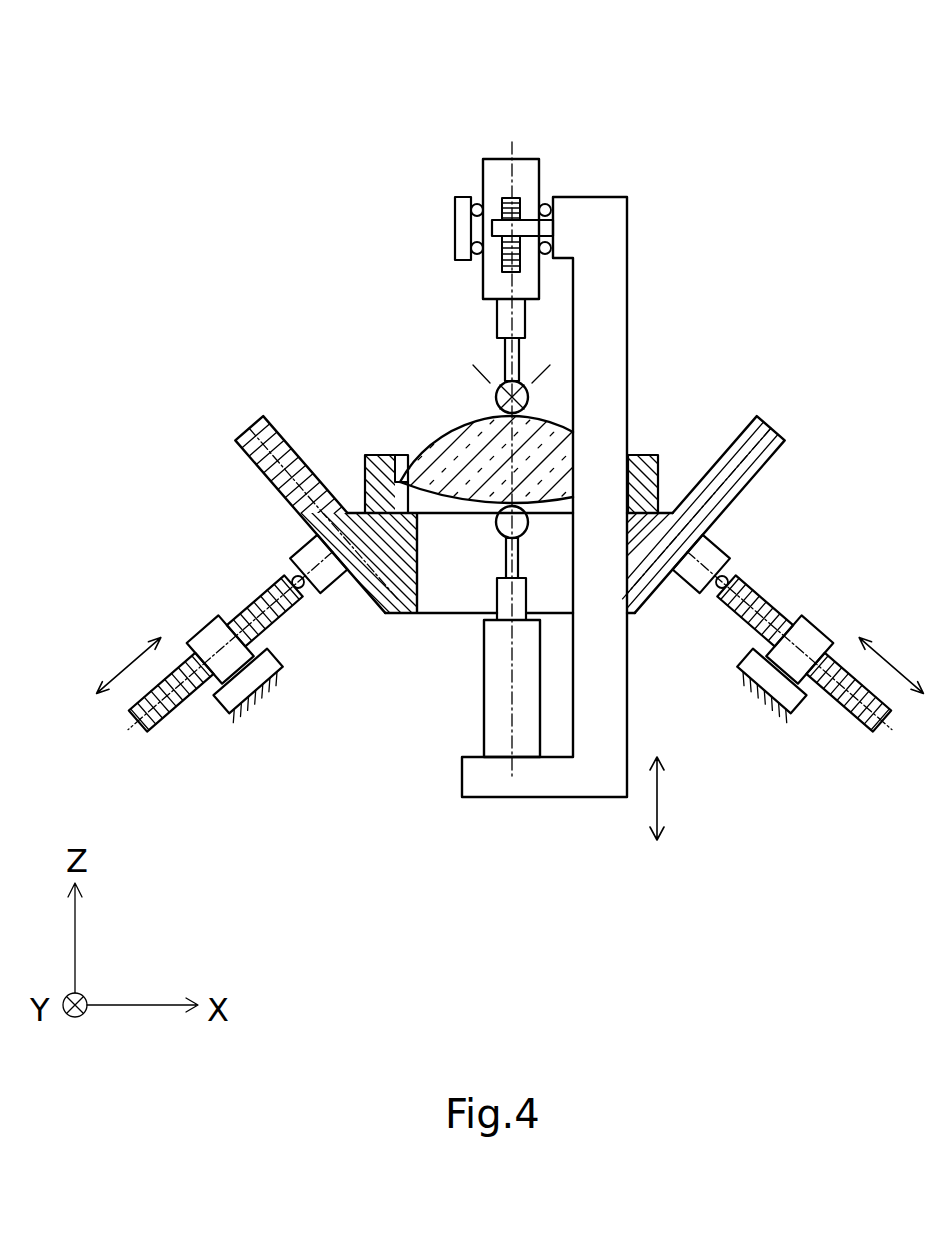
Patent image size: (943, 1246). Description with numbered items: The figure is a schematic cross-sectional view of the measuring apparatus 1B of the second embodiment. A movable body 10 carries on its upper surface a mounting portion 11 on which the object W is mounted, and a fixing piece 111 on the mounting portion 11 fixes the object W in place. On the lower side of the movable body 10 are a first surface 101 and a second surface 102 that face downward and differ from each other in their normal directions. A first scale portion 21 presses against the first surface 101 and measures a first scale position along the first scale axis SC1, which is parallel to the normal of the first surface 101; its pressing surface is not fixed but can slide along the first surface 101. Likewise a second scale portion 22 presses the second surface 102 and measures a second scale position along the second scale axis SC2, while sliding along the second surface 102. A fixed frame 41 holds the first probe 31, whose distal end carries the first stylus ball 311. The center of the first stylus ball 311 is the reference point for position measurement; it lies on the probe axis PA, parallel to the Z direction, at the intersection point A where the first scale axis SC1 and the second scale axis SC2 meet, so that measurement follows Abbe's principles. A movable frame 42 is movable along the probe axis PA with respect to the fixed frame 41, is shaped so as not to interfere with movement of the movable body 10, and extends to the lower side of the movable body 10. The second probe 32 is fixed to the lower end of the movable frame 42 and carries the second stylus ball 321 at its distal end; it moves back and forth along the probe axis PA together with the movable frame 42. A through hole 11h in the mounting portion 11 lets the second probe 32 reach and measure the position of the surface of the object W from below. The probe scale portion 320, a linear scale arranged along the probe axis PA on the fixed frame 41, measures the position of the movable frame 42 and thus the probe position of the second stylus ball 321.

The measuring apparatus 1B is at (710, 102).
The probe axis PA is at (513, 150).
The fixed frame 41 is at (532, 178).
The probe scale portion 320 is at (503, 230).
The movable frame 42 is at (618, 248).
The first probe 31 is at (499, 288).
The first stylus ball 311 is at (495, 393).
The intersection point A is at (498, 395).
The object W is at (552, 405).
The fixing piece 111 is at (385, 467).
The mounting portion 11 is at (353, 512).
The through hole 11h is at (427, 600).
The second stylus ball 321 is at (507, 525).
The second probe 32 is at (497, 685).
The movable body 10 is at (515, 514).
The first surface 101 is at (268, 475).
The second surface 102 is at (742, 493).
The first scale portion 21 is at (222, 662).
The second scale portion 22 is at (798, 665).
The first scale axis SC1 is at (125, 730).
The second scale axis SC2 is at (885, 738).